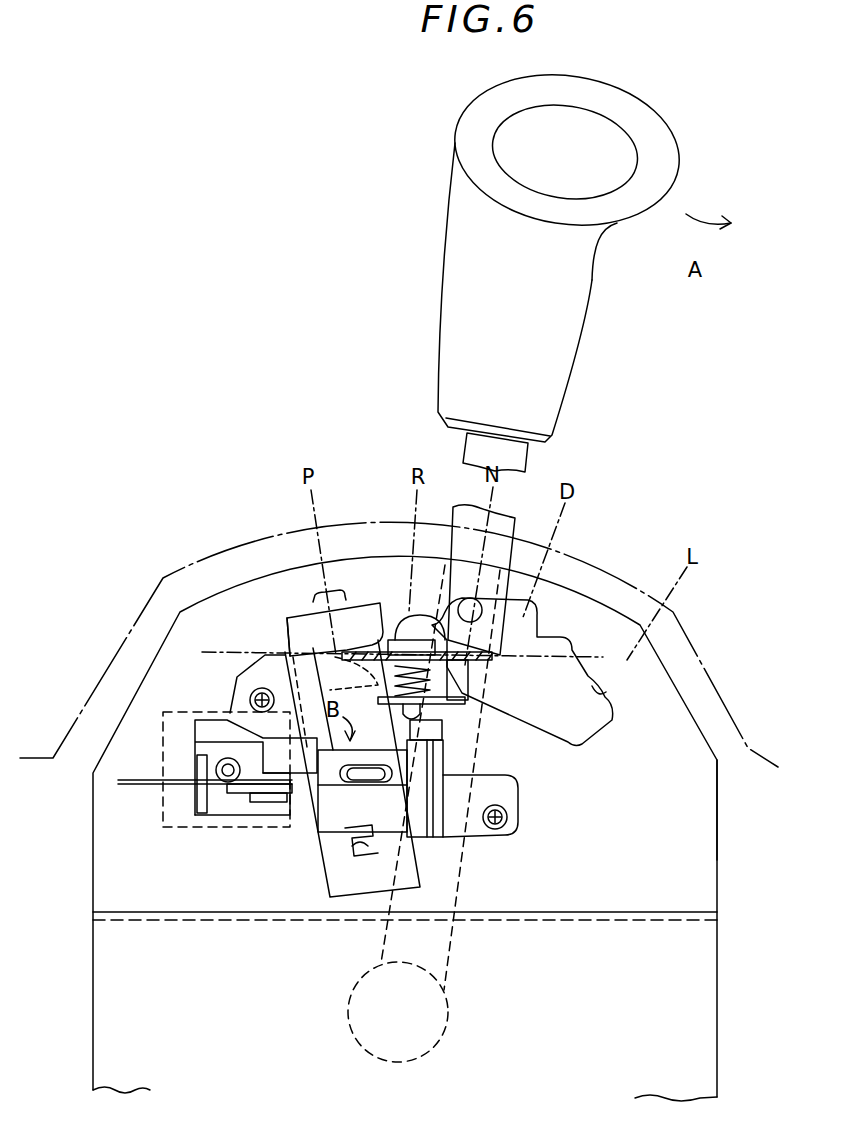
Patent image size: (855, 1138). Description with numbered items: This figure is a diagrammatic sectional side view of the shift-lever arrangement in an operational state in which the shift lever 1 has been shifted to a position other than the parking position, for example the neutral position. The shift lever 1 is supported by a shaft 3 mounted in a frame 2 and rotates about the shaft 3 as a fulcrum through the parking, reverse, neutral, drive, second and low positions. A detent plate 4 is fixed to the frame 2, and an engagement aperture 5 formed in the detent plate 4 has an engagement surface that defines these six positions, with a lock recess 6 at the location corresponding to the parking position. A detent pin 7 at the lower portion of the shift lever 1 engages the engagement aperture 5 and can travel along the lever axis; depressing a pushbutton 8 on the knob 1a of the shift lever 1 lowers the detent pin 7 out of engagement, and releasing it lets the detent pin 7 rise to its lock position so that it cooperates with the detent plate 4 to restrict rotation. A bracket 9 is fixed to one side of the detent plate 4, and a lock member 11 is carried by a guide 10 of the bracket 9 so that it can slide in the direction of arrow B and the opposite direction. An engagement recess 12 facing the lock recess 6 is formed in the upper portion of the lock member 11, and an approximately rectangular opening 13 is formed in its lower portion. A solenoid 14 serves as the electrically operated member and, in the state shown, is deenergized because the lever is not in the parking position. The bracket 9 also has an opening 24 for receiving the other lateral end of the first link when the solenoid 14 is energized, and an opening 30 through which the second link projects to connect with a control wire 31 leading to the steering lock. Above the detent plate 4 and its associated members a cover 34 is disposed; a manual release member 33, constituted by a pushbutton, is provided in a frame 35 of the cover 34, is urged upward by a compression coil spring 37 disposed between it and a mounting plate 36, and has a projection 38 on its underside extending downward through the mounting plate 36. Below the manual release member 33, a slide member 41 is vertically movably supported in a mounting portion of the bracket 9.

The shift lever 1 is at (533, 455).
The knob 1a is at (577, 352).
The frame 2 is at (577, 627).
The shaft 3 is at (448, 1022).
The detent plate 4 is at (718, 810).
The engagement aperture 5 is at (604, 700).
The lock recess 6 is at (315, 602).
The detent pin 7 is at (493, 620).
The pushbutton 8 is at (633, 163).
The bracket 9 is at (473, 838).
The guide 10 is at (287, 652).
The lock member 11 is at (288, 620).
The engagement recess 12 is at (334, 654).
The opening 13 is at (362, 855).
The solenoid 14 is at (195, 712).
The opening 24 is at (392, 785).
The opening 30 is at (255, 810).
The control wire 31 is at (125, 790).
The manual release member 33 is at (410, 630).
The cover 34 is at (633, 592).
The frame 35 is at (478, 664).
The mounting plate 36 is at (467, 702).
The compression coil spring 37 is at (467, 693).
The projection 38 is at (420, 710).
The slide member 41 is at (437, 730).